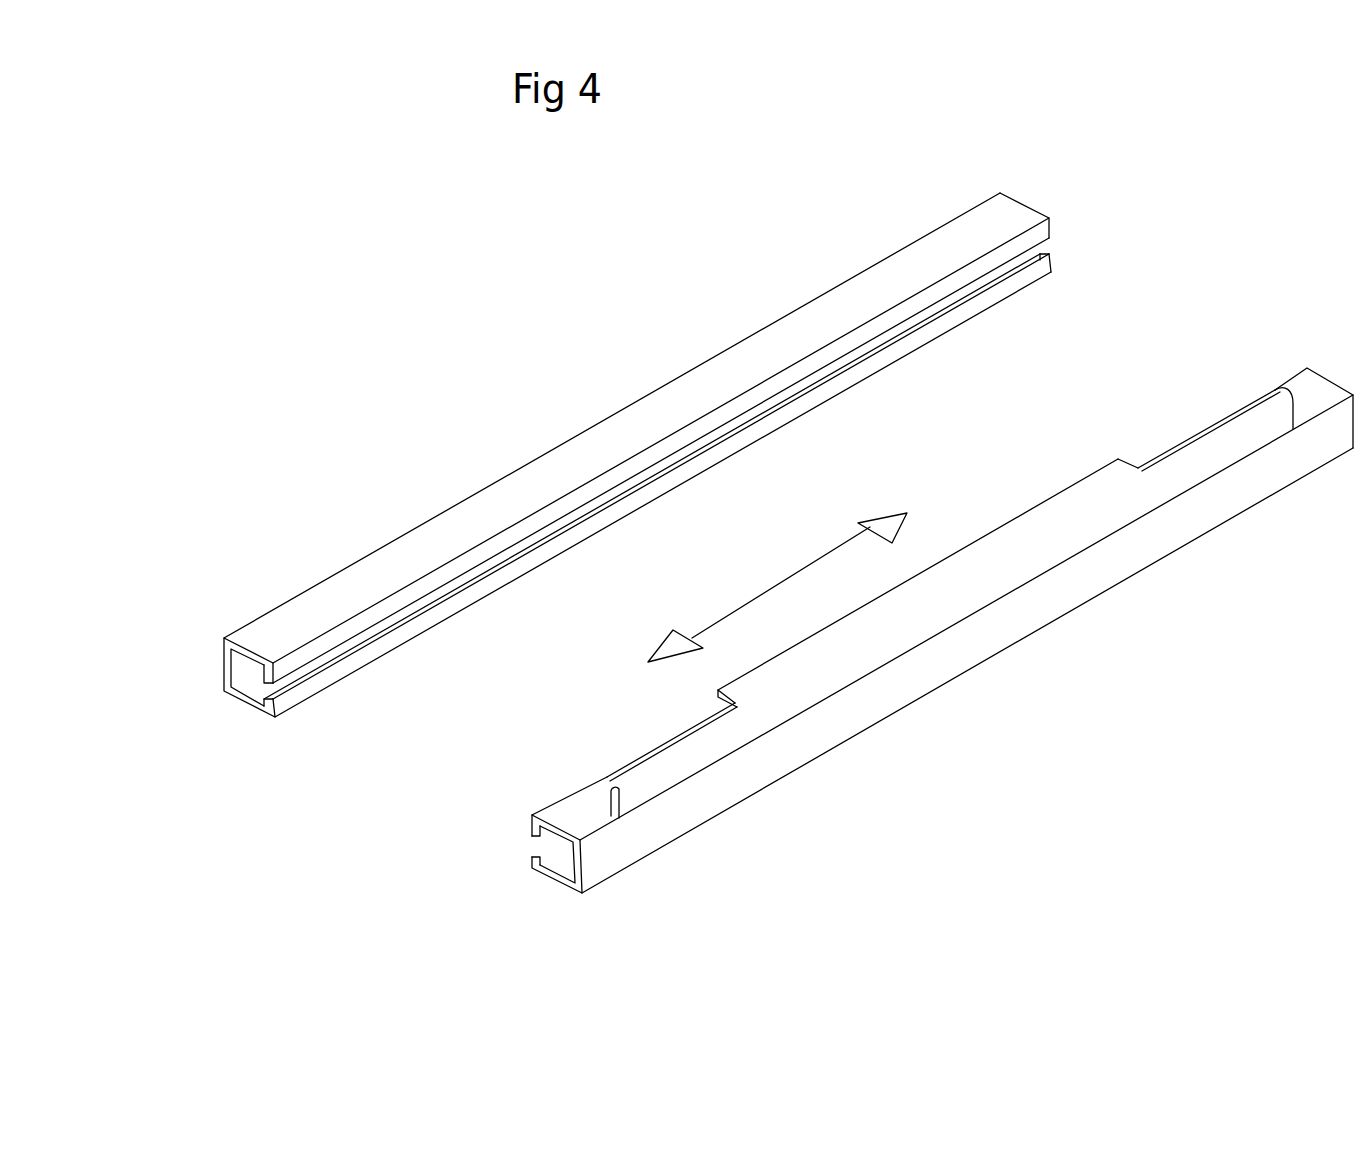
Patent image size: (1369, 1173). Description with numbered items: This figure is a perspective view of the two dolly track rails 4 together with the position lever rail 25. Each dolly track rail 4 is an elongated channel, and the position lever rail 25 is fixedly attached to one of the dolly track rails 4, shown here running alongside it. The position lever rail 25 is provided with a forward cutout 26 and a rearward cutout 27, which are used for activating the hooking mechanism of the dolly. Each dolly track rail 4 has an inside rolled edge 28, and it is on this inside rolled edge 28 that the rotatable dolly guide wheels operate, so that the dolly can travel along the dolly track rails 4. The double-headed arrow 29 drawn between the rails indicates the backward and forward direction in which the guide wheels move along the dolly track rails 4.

The dolly track rail 4 is at (222, 664).
The position lever rail 25 is at (350, 541).
The forward cutout 26 is at (1203, 424).
The rearward cutout 27 is at (609, 768).
The inside rolled edge 28 is at (267, 680).
The arrow 29 is at (778, 578).